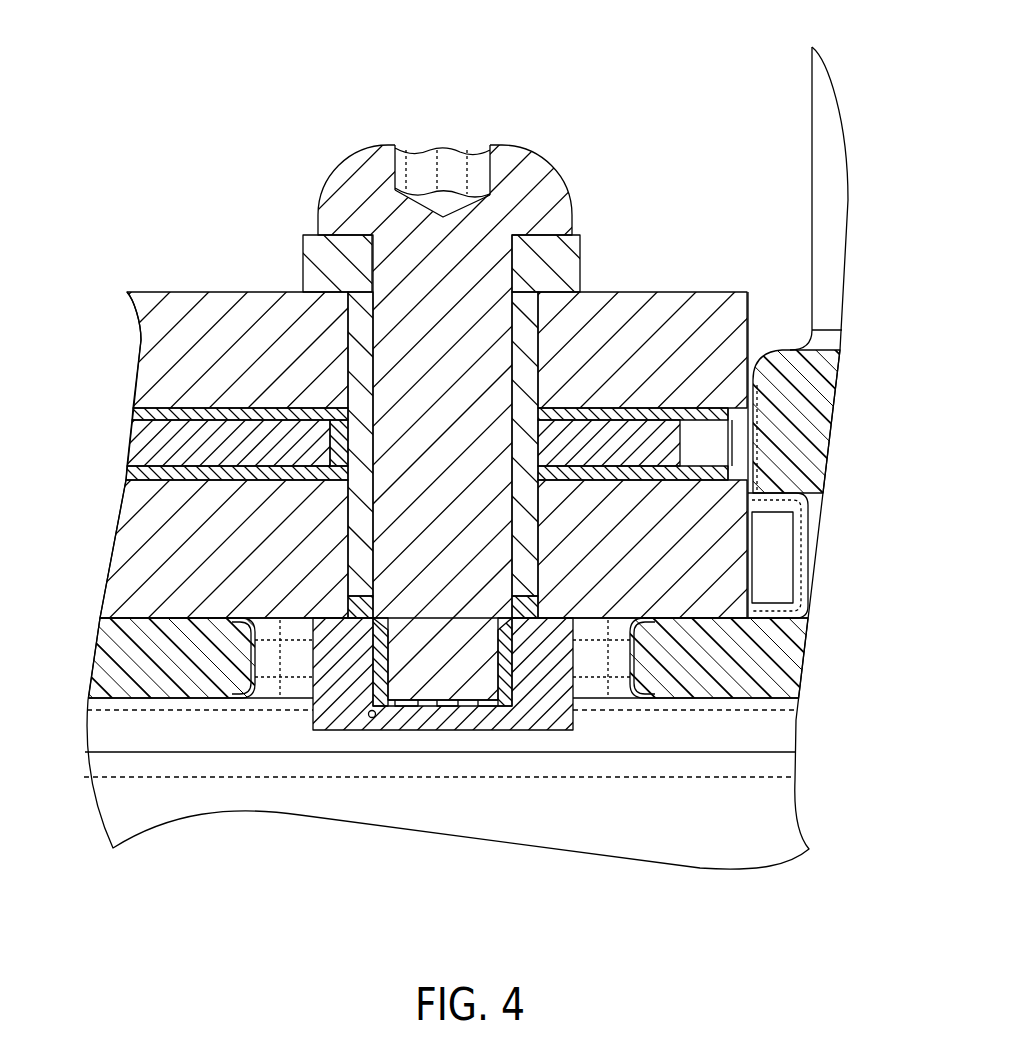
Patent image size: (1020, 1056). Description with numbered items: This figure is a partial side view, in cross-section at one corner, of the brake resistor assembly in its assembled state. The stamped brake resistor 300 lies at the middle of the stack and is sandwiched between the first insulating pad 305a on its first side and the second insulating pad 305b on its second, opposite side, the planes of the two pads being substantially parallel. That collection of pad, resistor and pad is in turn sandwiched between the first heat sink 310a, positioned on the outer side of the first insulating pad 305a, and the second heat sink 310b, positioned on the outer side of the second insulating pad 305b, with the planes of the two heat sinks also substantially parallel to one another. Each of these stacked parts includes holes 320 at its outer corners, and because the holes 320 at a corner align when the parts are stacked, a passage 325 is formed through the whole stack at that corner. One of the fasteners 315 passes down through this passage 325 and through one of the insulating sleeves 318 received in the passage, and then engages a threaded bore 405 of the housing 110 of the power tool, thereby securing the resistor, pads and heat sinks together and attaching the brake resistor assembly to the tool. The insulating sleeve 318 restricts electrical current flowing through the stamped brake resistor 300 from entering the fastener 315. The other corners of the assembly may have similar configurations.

The housing 110 is at (107, 808).
The stamped brake resistor 300 is at (148, 446).
The first insulating pad 305a is at (728, 411).
The second insulating pad 305b is at (722, 475).
The first heat sink 310a is at (150, 345).
The second heat sink 310b is at (122, 557).
The fastener 315 is at (480, 160).
The insulating sleeve 318 is at (572, 247).
The holes 320 is at (510, 470).
The passage 325 is at (347, 367).
The threaded bore 405 is at (357, 688).